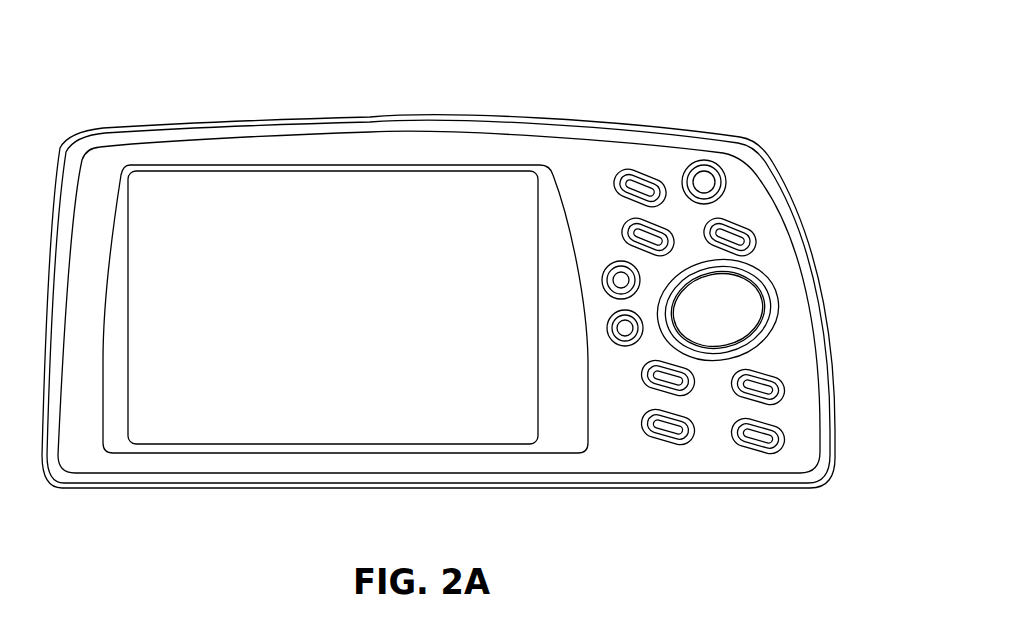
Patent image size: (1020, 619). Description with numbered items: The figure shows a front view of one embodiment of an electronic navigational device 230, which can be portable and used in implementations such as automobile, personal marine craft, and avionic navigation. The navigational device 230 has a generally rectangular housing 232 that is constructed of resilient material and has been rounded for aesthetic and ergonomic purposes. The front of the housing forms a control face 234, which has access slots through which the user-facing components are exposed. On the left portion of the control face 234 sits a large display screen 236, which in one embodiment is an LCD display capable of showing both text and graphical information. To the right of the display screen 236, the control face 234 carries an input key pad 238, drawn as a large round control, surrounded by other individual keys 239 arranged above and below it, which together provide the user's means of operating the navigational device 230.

The electronic navigational device 230 is at (640, 80).
The housing 232 is at (284, 118).
The control face 234 is at (407, 150).
The display screen 236 is at (215, 428).
The input key pad 238 is at (757, 318).
The individual keys 239 is at (730, 238).